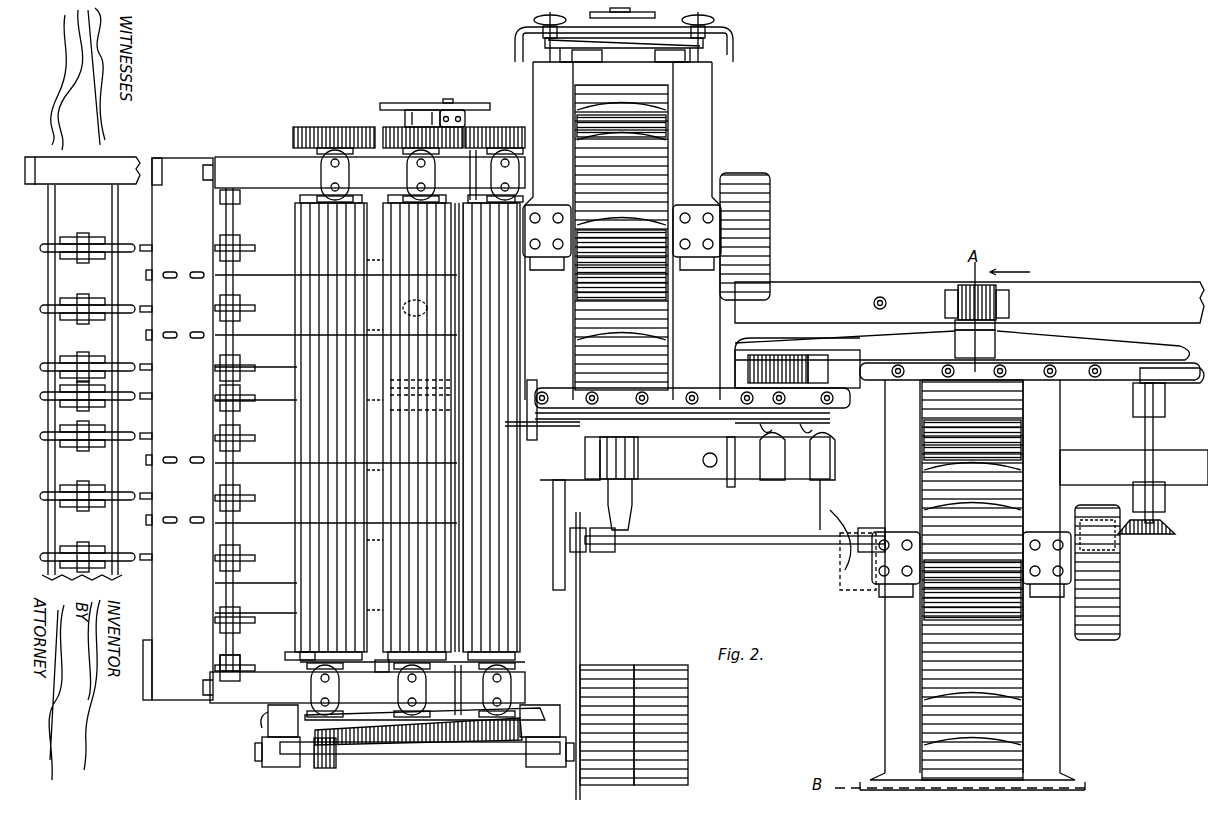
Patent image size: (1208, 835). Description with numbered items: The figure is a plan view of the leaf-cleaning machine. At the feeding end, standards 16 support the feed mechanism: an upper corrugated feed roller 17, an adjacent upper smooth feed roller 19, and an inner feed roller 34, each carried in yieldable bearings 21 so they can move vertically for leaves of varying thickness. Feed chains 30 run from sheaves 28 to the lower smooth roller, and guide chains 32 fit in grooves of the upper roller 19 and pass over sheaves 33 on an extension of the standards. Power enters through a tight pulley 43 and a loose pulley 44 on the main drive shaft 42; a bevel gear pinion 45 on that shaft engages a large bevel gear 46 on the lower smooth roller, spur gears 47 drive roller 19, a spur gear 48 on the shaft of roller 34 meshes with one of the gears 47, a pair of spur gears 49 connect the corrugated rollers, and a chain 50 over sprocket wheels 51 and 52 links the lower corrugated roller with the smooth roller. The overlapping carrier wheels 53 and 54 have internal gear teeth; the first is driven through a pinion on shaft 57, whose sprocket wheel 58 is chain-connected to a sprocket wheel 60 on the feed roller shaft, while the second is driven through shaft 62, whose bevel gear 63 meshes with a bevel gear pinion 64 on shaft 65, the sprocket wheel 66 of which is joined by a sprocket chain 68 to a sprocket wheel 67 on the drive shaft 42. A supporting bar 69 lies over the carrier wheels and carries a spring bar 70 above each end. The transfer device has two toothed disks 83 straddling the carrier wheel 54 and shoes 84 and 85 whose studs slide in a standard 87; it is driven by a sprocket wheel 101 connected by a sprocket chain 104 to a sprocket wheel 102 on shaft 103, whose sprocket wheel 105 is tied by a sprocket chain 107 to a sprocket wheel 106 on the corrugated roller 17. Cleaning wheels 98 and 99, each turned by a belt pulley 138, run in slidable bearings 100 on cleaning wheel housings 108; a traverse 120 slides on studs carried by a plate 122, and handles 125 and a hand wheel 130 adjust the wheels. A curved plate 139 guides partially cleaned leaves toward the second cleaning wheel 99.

The standards 16 is at (272, 172).
The corrugated feed roller 17 is at (306, 220).
The smooth feed roller 19 is at (409, 427).
The bearings 21 is at (486, 160).
The sheaves 28 is at (52, 244).
The feed chains 30 is at (152, 246).
The guide chains 32 is at (284, 336).
The sheaves 33 is at (238, 250).
The inner feed roller 34 is at (487, 427).
The main drive shaft 42 is at (472, 752).
The tight pulley 43 is at (610, 668).
The loose pulley 44 is at (660, 668).
The bevel gear pinion 45 is at (320, 764).
The large bevel gear 46 is at (486, 746).
The spur gears 47 is at (400, 135).
The spur gear 48 is at (528, 122).
The spur gears 49 is at (334, 128).
The chain 50 is at (380, 660).
The sprocket wheel 51 is at (292, 655).
The sprocket wheel 52 is at (448, 302).
The carrier wheel 53 is at (652, 455).
The carrier wheel 54 is at (1150, 352).
The shaft 57 is at (448, 99).
The sprocket wheel 58 is at (476, 103).
The sprocket wheel 60 is at (416, 105).
The shaft 62 is at (1154, 440).
The bevel gear 63 is at (1172, 536).
The bevel gear pinion 64 is at (1125, 550).
The shaft 65 is at (776, 544).
The sprocket wheel 66 is at (570, 552).
The sprocket wheel 67 is at (574, 768).
The sprocket chain 68 is at (580, 622).
The supporting bar 69 is at (810, 379).
The spring bar 70 is at (869, 385).
The toothed disks 83 is at (772, 358).
The shoe 84 is at (768, 440).
The shoe 85 is at (812, 442).
The standard 87 is at (804, 484).
The cleaning wheel 98 is at (650, 120).
The cleaning wheel 99 is at (950, 655).
The bearings 100 is at (550, 216).
The sprocket wheel 101 is at (810, 428).
The sprocket wheel 102 is at (538, 428).
The shaft 103 is at (540, 525).
The sprocket chain 104 is at (660, 428).
The sprocket wheel 105 is at (534, 702).
The sprocket wheel 106 is at (282, 712).
The sprocket chain 107 is at (372, 730).
The cleaning wheel housing 108 is at (692, 146).
The traverse 120 is at (680, 44).
The plate 122 is at (600, 62).
The handles 125 is at (534, 20).
The hand wheel 130 is at (640, 18).
The belt pulley 138 is at (758, 212).
The curved plate 139 is at (850, 552).